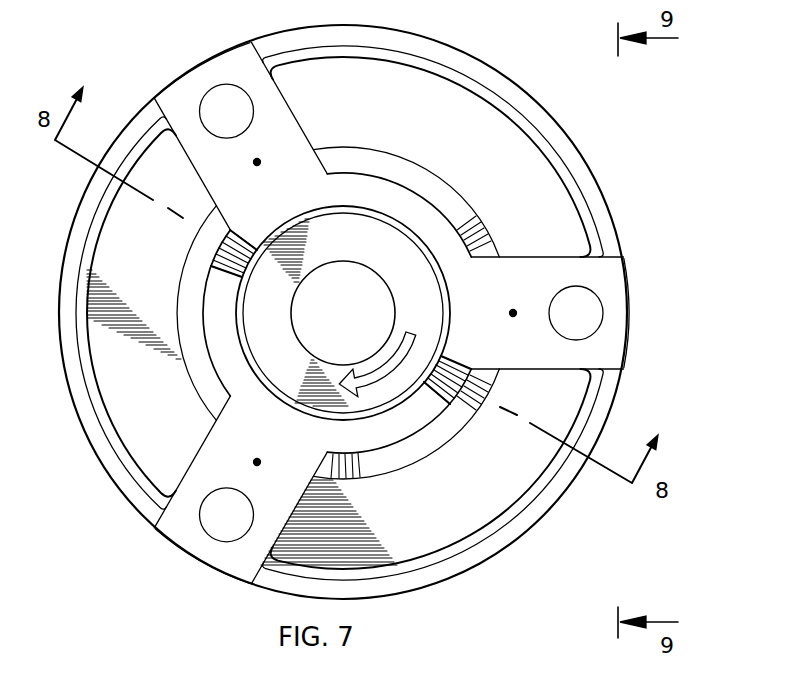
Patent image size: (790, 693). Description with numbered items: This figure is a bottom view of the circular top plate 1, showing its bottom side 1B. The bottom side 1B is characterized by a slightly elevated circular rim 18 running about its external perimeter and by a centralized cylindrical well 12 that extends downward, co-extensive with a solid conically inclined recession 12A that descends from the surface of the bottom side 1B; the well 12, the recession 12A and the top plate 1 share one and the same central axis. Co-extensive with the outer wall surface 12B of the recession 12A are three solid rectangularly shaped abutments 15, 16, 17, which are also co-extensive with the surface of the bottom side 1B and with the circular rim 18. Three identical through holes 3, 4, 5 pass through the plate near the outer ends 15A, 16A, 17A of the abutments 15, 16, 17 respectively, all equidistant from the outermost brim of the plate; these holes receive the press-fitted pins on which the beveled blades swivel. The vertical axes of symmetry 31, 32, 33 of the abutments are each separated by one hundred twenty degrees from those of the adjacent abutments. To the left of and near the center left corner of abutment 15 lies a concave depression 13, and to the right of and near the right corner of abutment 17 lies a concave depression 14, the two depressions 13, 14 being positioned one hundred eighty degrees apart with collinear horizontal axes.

The top plate 1 is at (668, 134).
The bottom side 1B is at (455, 515).
The through hole 3 is at (595, 322).
The through hole 4 is at (215, 523).
The through hole 5 is at (218, 93).
The cylindrical well 12 is at (362, 185).
The conically inclined recession 12A is at (430, 186).
The outer wall surface 12B is at (370, 463).
The concave depression 13 is at (470, 405).
The concave depression 14 is at (238, 247).
The abutment 15 is at (568, 272).
The outer end 15A is at (608, 277).
The abutment 16 is at (254, 533).
The outer end 16A is at (178, 534).
The abutment 17 is at (270, 113).
The outer end 17A is at (229, 53).
The circular rim 18 is at (133, 128).
The vertical axis of symmetry 31 is at (513, 313).
The vertical axis of symmetry 32 is at (257, 462).
The vertical axis of symmetry 33 is at (257, 162).